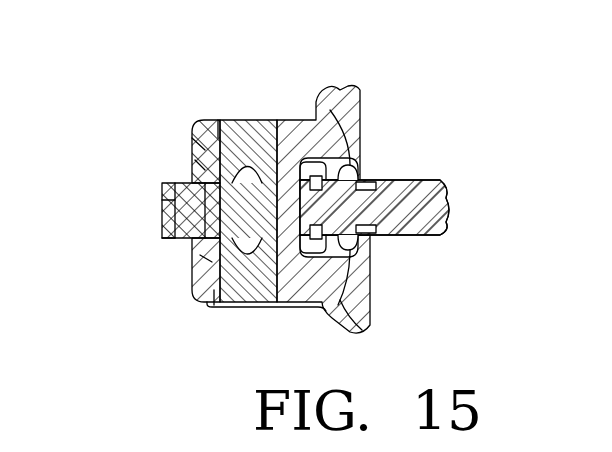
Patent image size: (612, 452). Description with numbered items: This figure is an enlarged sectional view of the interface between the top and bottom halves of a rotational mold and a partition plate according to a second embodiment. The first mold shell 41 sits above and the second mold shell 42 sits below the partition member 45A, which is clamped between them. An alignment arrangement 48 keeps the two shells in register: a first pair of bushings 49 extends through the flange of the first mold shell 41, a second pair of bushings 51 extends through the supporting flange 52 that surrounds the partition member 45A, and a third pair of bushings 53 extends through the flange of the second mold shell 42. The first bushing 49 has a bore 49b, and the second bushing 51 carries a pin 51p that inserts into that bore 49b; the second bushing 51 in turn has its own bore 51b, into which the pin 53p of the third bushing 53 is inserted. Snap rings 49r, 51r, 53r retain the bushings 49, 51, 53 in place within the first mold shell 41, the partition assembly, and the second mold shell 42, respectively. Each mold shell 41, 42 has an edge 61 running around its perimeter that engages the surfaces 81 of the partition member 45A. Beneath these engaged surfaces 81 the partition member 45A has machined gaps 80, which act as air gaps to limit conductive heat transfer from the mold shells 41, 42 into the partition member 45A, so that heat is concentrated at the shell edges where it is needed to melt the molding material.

The first mold shell 41 is at (322, 95).
The second mold shell 42 is at (322, 322).
The partition member 45A is at (440, 208).
The alignment arrangement 48 is at (258, 120).
The first pair of bushings 49 is at (200, 121).
The bore 49b is at (192, 142).
The snap ring 49r is at (217, 120).
The second pair of bushings 51 is at (165, 223).
The pin 51p is at (195, 165).
The snap ring 51r is at (165, 205).
The bore 51b is at (165, 243).
The supporting flange 52 is at (162, 190).
The third pair of bushings 53 is at (203, 304).
The pin 53p is at (200, 255).
The snap ring 53r is at (214, 305).
The edge 61 is at (360, 165).
The machined gaps 80 is at (356, 160).
The surfaces 81 is at (376, 185).